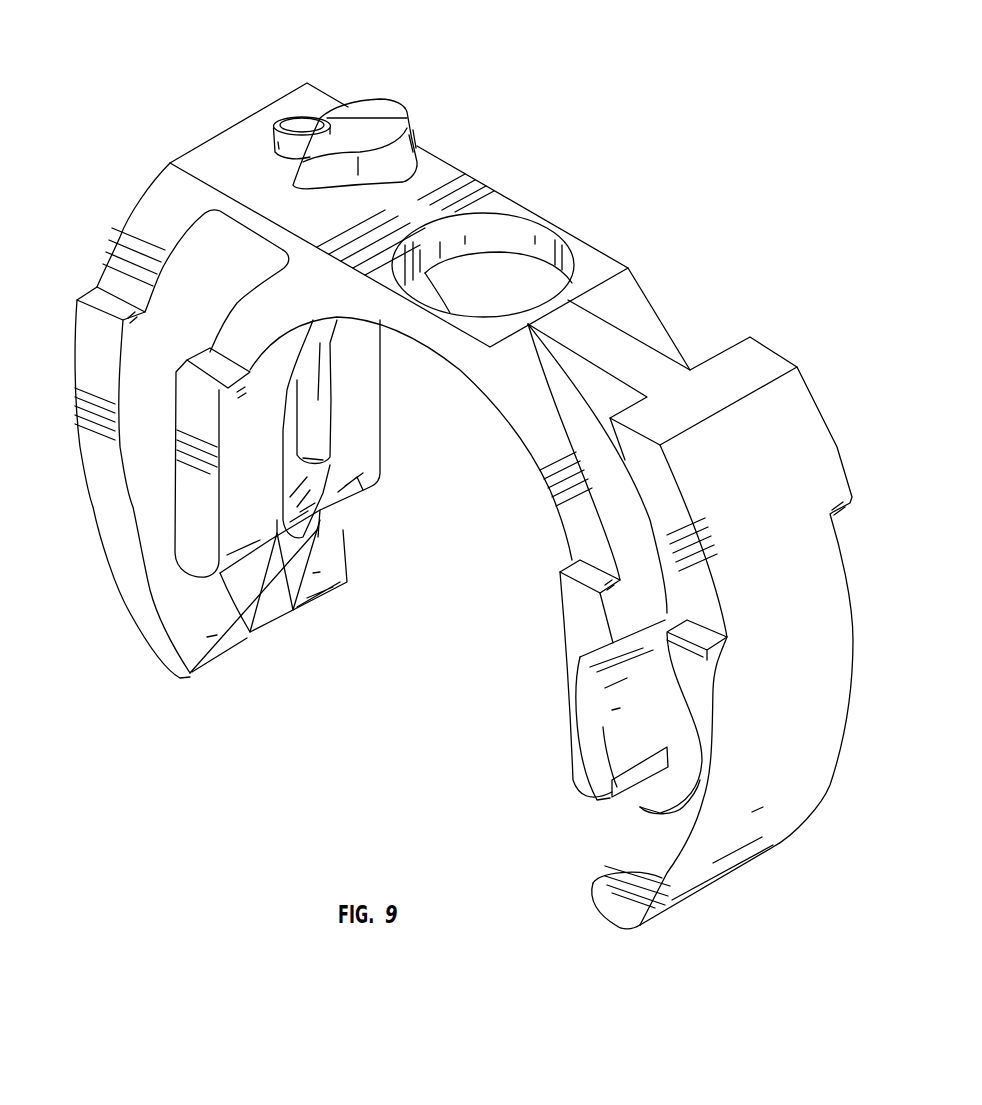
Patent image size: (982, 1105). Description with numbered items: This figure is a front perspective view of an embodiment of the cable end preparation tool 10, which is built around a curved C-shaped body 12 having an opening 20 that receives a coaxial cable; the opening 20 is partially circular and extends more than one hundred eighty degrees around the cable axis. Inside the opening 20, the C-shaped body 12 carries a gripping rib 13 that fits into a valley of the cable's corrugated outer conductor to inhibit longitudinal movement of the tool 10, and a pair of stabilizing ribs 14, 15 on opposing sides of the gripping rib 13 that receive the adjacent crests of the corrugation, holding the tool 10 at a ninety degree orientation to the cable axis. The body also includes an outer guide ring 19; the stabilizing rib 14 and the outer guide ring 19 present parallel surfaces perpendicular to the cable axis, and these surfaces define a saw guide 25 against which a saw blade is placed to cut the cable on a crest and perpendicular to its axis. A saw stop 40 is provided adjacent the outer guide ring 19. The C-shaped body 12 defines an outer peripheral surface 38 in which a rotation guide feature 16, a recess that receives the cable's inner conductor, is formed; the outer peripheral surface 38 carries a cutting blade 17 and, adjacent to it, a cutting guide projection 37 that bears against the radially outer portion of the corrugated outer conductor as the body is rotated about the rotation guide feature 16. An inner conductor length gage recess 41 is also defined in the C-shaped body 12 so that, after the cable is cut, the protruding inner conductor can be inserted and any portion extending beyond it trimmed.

The cable end preparation tool 10 is at (102, 116).
The C-shaped body 12 is at (839, 449).
The gripping rib 13 is at (318, 510).
The stabilizing rib 14 is at (233, 535).
The stabilizing rib 15 is at (357, 473).
The rotation guide feature 16 is at (513, 270).
The cutting blade 17 is at (377, 108).
The outer guide ring 19 is at (624, 926).
The opening 20 is at (478, 547).
The saw guide 25 is at (202, 562).
The cutting guide projection 37 is at (297, 125).
The outer peripheral surface 38 is at (443, 170).
The saw stop 40 is at (100, 297).
The inner conductor length gage recess 41 is at (605, 740).